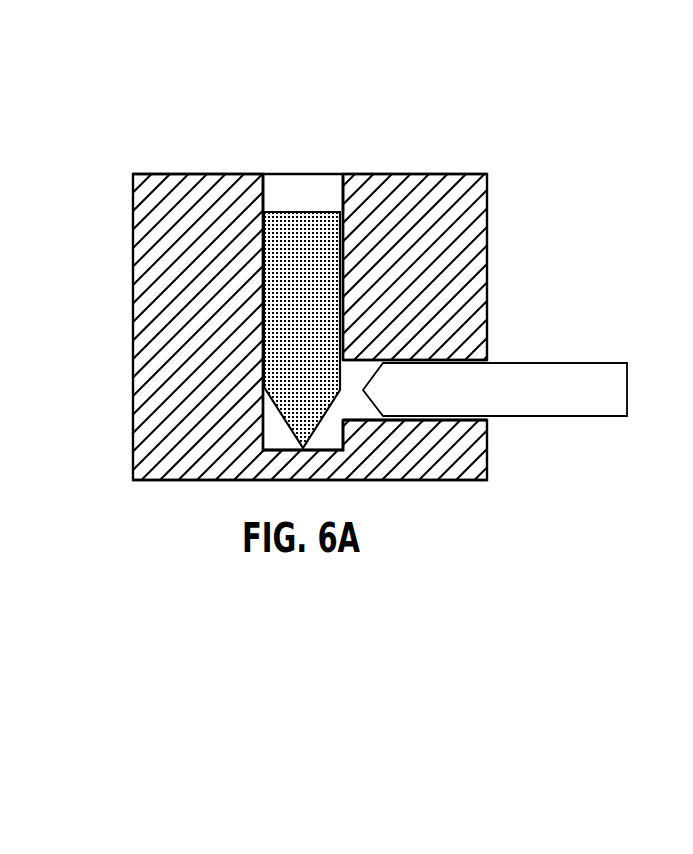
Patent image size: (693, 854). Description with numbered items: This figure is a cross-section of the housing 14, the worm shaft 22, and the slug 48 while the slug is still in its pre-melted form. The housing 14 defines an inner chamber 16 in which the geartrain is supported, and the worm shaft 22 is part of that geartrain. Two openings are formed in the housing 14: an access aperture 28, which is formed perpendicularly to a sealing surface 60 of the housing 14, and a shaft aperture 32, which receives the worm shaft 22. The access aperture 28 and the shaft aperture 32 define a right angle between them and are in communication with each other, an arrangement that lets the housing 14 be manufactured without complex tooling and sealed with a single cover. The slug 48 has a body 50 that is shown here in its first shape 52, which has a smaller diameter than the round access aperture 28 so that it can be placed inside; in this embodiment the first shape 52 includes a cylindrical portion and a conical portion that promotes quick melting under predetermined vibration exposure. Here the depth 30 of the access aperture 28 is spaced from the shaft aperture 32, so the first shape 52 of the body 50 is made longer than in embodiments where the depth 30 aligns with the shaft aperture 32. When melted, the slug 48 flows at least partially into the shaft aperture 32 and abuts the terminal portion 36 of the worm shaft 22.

The housing 14 is at (471, 175).
The inner chamber 16 is at (578, 288).
The worm shaft 22 is at (627, 426).
The access aperture 28 is at (277, 170).
The depth 30 is at (338, 482).
The shaft aperture 32 is at (365, 410).
The terminal portion 36 is at (450, 400).
The slug 48 is at (316, 244).
The body 50 is at (158, 481).
The first shape 52 is at (259, 388).
The sealing surface 60 is at (440, 175).